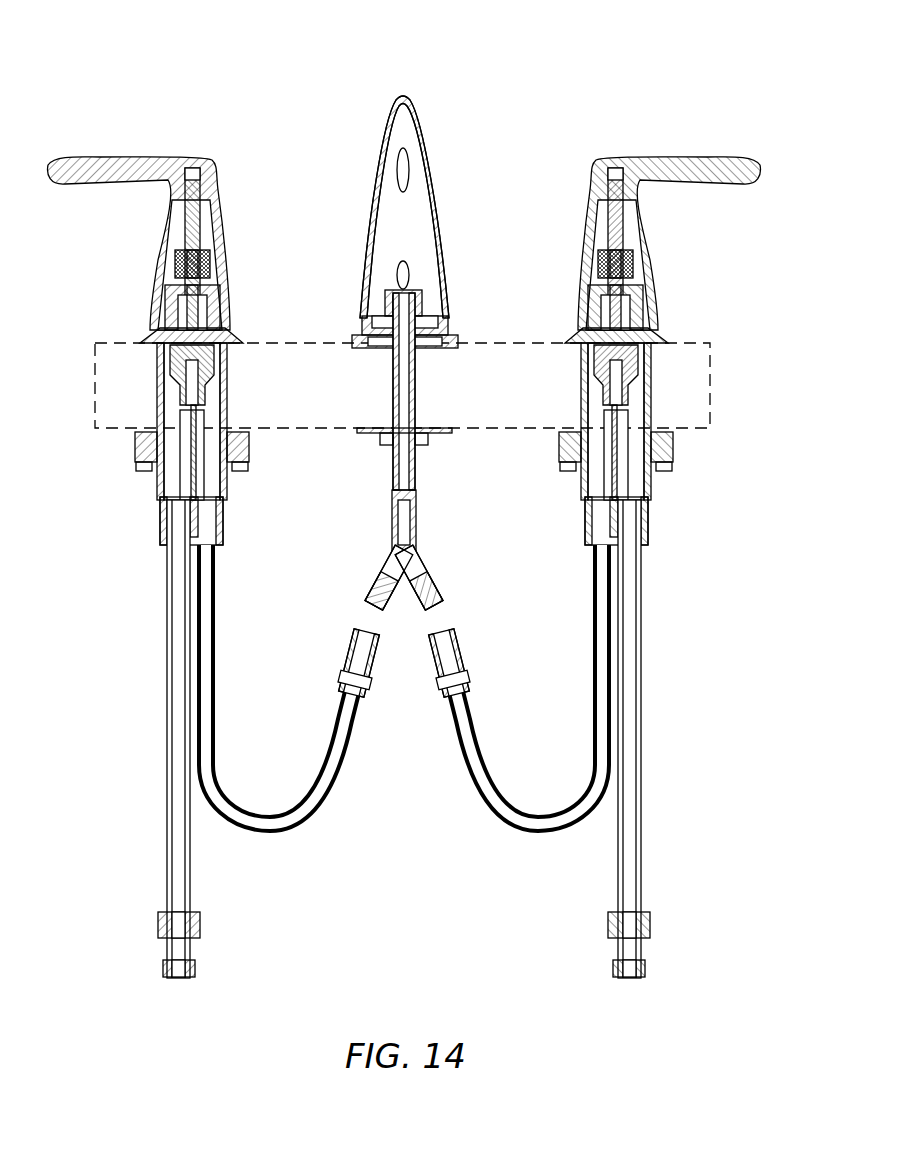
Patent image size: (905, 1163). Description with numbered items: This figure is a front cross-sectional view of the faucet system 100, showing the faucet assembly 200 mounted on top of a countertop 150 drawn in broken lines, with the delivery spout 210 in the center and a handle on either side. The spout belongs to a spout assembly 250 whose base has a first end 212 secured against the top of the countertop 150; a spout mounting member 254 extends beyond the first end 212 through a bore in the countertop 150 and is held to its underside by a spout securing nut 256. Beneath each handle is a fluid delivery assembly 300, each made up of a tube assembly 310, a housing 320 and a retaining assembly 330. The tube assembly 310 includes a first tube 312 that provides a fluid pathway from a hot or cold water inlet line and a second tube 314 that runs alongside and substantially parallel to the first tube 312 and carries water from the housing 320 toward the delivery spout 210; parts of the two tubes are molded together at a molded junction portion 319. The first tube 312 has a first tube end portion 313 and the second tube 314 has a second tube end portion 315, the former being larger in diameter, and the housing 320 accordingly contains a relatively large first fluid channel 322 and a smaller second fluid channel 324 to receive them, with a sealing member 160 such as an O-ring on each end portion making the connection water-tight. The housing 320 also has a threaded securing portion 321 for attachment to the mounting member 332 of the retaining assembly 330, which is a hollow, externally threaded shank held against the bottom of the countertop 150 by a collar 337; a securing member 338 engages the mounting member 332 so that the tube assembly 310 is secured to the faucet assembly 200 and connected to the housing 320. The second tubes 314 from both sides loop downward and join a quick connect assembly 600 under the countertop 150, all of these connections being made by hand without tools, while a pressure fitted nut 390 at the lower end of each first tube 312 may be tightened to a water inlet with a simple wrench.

The faucet system 100 is at (578, 106).
The countertop 150 is at (497, 354).
The sealing member 160 is at (213, 455).
The faucet assembly 200 is at (413, 285).
The delivery spout 210 is at (425, 122).
The first end 212 is at (358, 343).
The spout assembly 250 is at (455, 265).
The spout mounting member 254 is at (418, 445).
The spout securing nut 256 is at (392, 437).
The fluid delivery assembly 300 is at (601, 547).
The tube assembly 310 is at (160, 635).
The first tube 312 is at (632, 840).
The first tube end portion 313 is at (628, 392).
The second tube 314 is at (493, 805).
The second tube end portion 315 is at (600, 407).
The molded junction portion 319 is at (195, 502).
The housing 320 is at (655, 372).
The threaded securing portion 321 is at (213, 320).
The first fluid channel 322 is at (178, 415).
The second fluid channel 324 is at (207, 422).
The retaining assembly 330 is at (152, 514).
The mounting member 332 is at (647, 483).
The collar 337 is at (672, 452).
The securing member 338 is at (647, 528).
The pressure fitted nut 390 is at (645, 926).
The quick connect assembly 600 is at (410, 540).